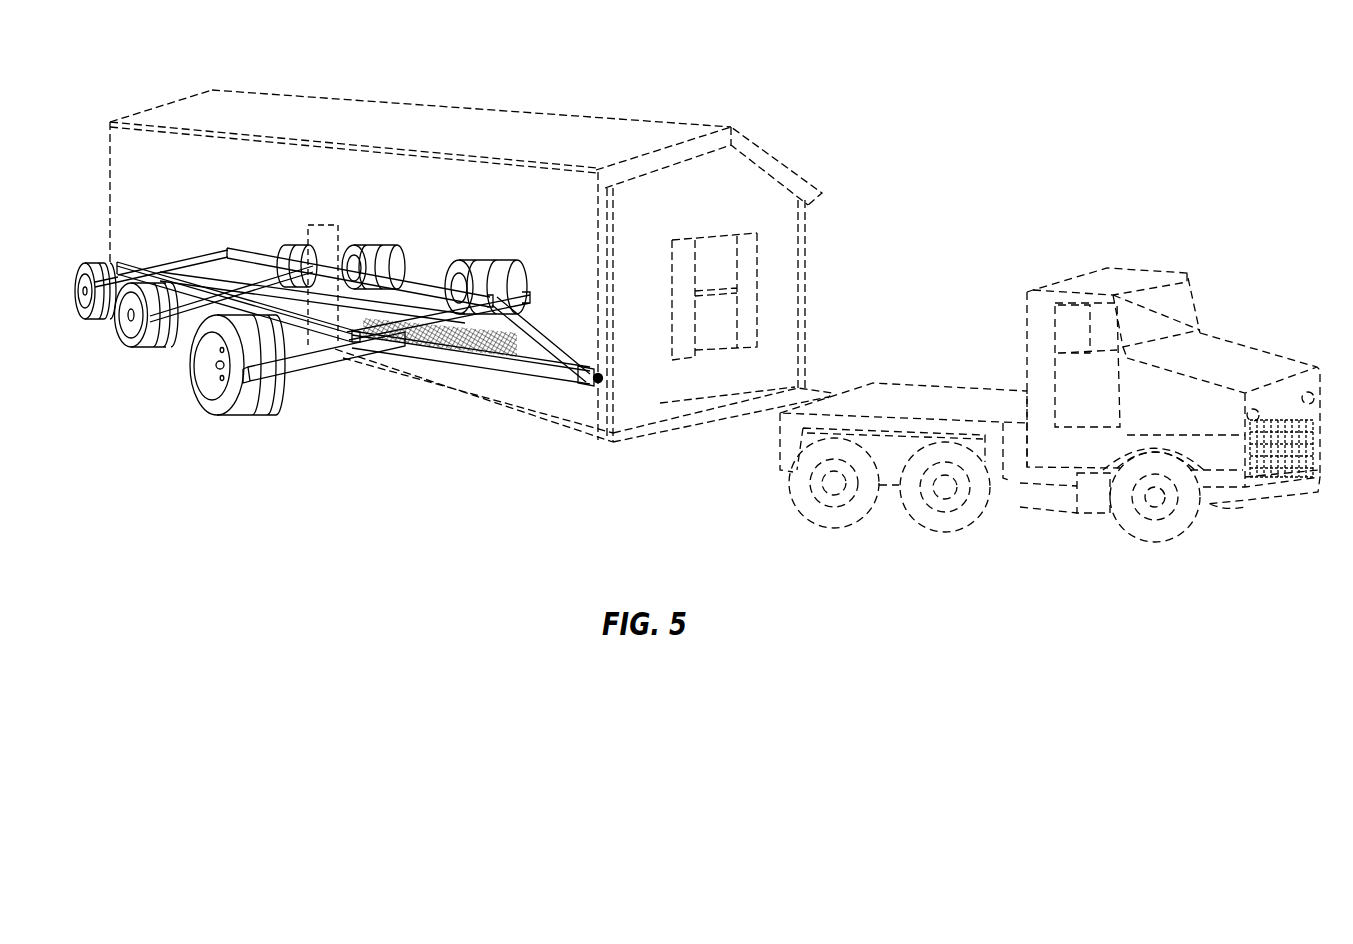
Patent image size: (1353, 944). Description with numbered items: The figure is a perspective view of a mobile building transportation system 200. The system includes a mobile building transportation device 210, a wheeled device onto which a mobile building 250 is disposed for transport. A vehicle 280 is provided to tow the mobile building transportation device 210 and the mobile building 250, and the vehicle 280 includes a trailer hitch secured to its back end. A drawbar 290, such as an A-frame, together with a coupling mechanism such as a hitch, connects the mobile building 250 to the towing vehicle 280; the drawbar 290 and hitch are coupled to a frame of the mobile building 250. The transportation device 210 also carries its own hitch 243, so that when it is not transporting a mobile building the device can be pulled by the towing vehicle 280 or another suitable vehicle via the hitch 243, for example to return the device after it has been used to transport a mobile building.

The mobile building transportation system 200 is at (616, 86).
The mobile building transportation device 210 is at (92, 243).
The hitch 243 is at (527, 386).
The mobile building 250 is at (808, 242).
The vehicle 280 is at (1138, 270).
The drawbar 290 is at (728, 415).